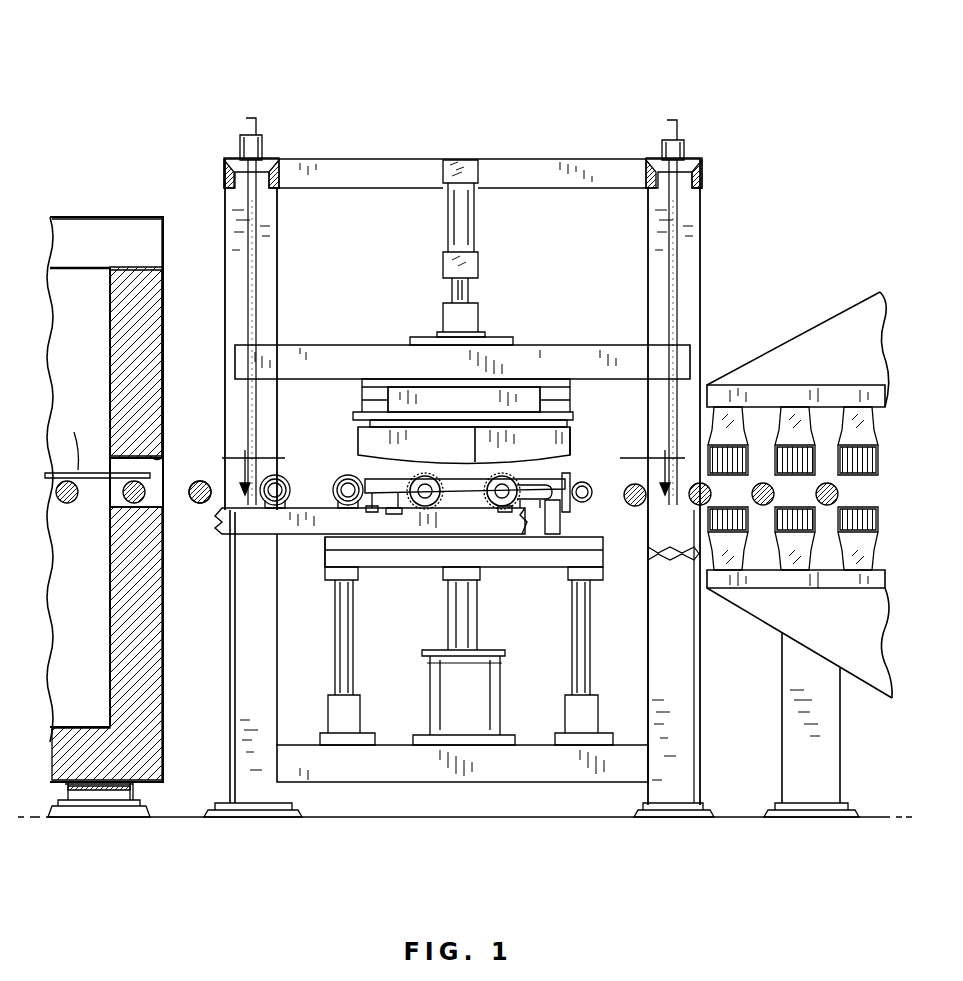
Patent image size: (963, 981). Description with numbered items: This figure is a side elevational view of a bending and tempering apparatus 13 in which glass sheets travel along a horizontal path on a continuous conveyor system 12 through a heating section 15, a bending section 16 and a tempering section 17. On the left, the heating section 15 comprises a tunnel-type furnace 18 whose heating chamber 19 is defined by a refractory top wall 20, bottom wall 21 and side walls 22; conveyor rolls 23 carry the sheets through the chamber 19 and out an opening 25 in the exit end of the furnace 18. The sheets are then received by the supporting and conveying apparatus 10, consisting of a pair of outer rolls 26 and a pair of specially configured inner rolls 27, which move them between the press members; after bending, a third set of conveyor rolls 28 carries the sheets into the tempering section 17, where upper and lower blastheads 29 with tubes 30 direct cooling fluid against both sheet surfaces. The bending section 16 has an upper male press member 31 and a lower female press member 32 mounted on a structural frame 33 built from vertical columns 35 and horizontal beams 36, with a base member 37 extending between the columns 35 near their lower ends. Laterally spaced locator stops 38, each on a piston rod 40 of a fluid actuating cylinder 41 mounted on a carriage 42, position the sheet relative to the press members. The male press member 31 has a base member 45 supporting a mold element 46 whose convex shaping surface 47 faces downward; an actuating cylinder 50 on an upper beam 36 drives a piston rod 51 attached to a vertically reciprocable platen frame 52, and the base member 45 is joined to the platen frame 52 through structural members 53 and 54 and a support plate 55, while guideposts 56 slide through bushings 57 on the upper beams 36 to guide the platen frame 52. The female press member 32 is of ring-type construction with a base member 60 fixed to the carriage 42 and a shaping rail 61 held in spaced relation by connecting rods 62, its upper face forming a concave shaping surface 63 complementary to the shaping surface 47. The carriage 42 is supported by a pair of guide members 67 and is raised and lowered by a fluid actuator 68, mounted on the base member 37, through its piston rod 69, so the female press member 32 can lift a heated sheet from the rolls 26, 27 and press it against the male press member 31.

The supporting and conveying apparatus 10 is at (429, 515).
The conveyor system 12 is at (193, 512).
The bending and tempering apparatus 13 is at (128, 82).
The heating section 15 is at (74, 163).
The bending section 16 is at (478, 100).
The tempering section 17 is at (806, 315).
The tunnel-type furnace 18 is at (106, 208).
The heating chamber 19 is at (70, 325).
The top wall 20 is at (65, 244).
The bottom wall 21 is at (60, 755).
The side walls 22 is at (62, 665).
The conveyor rolls 23 is at (124, 498).
The opening 25 is at (160, 458).
The outer rolls 26 is at (338, 480).
The inner rolls 27 is at (452, 517).
The conveyor rolls 28 is at (697, 496).
The blastheads 29 is at (800, 425).
The tubes 30 is at (845, 478).
The male press member 31 is at (356, 436).
The female press member 32 is at (366, 516).
The structural frame 33 is at (540, 160).
The columns 35 is at (245, 652).
The beams 36 is at (228, 162).
The base member 37 is at (468, 766).
The locator stops 38 is at (566, 478).
The piston rod 40 is at (570, 504).
The fluid actuating cylinder 41 is at (575, 540).
The carriage 42 is at (368, 540).
The base member 45 is at (345, 392).
The mold element 46 is at (566, 437).
The shaping surface 47 is at (536, 484).
The actuating cylinder 50 is at (470, 214).
The piston rod 51 is at (458, 278).
The platen frame 52 is at (512, 360).
The structural member 53 is at (426, 396).
The structural member 54 is at (365, 395).
The support plate 55 is at (556, 372).
The guideposts 56 is at (262, 235).
The bushings 57 is at (258, 140).
The base member 60 is at (412, 540).
The shaping rail 61 is at (392, 506).
The connecting rods 62 is at (505, 517).
The shaping surface 63 is at (472, 486).
The guide members 67 is at (346, 665).
The fluid actuator 68 is at (502, 702).
The piston rod 69 is at (472, 612).